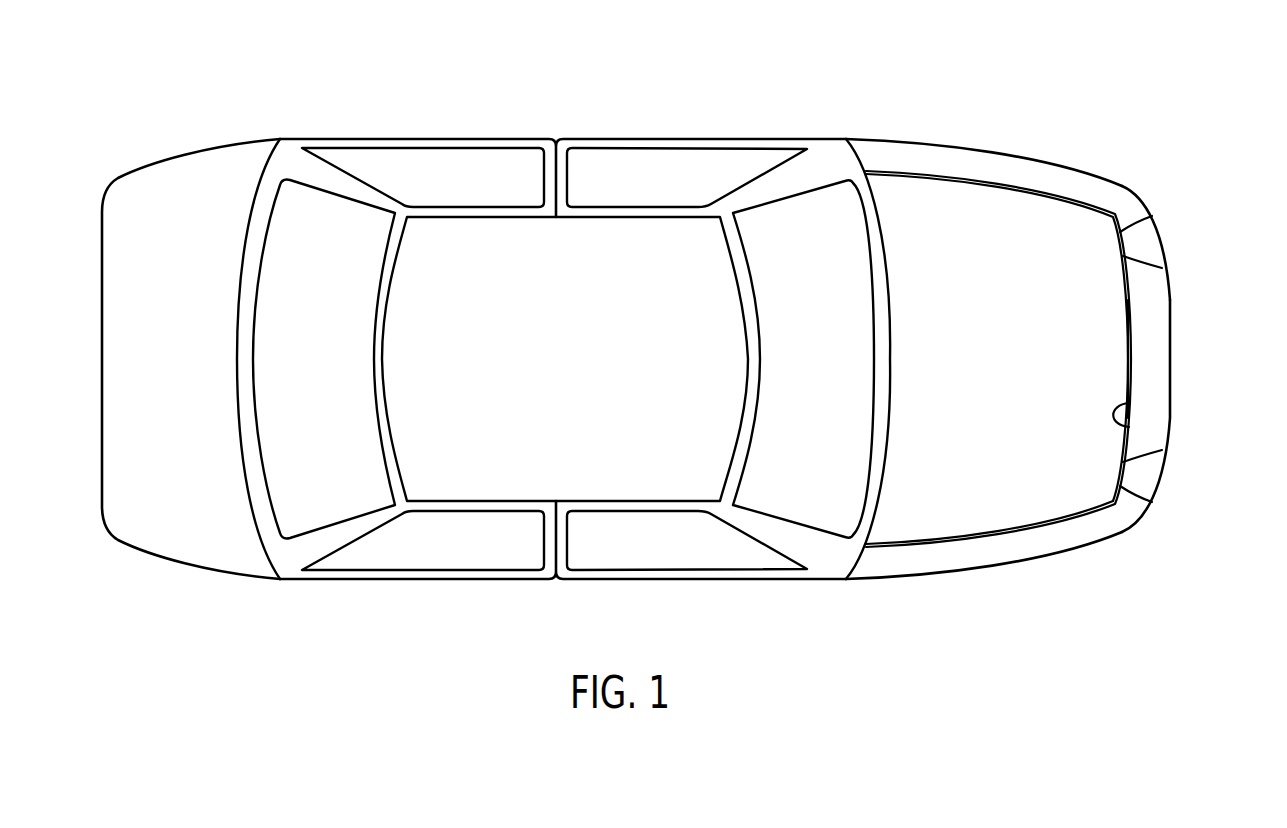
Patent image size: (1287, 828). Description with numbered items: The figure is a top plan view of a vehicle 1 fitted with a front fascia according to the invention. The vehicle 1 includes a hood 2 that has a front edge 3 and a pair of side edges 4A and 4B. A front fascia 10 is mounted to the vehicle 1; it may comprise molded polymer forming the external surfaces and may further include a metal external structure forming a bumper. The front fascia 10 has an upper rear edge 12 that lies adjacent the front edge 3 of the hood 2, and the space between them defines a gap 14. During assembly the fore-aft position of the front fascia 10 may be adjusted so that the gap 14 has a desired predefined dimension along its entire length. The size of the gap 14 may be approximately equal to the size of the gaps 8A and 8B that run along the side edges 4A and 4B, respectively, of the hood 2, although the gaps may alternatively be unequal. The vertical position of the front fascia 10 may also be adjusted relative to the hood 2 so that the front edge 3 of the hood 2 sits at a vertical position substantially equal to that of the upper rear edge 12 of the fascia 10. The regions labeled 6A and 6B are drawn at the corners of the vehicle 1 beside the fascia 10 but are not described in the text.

The vehicle 1 is at (784, 125).
The hood 2 is at (978, 213).
The front edge 3 is at (1120, 215).
The side edge 4A is at (1063, 198).
The side edge 4B is at (1037, 523).
The rear lamp (one side) 6A is at (1145, 240).
The rear lamp (other side) 6B is at (1135, 492).
The gap 8A is at (940, 174).
The gap 8B is at (928, 541).
The front fascia 10 is at (1171, 336).
The upper rear edge 12 is at (1131, 422).
The gap 14 is at (1131, 303).